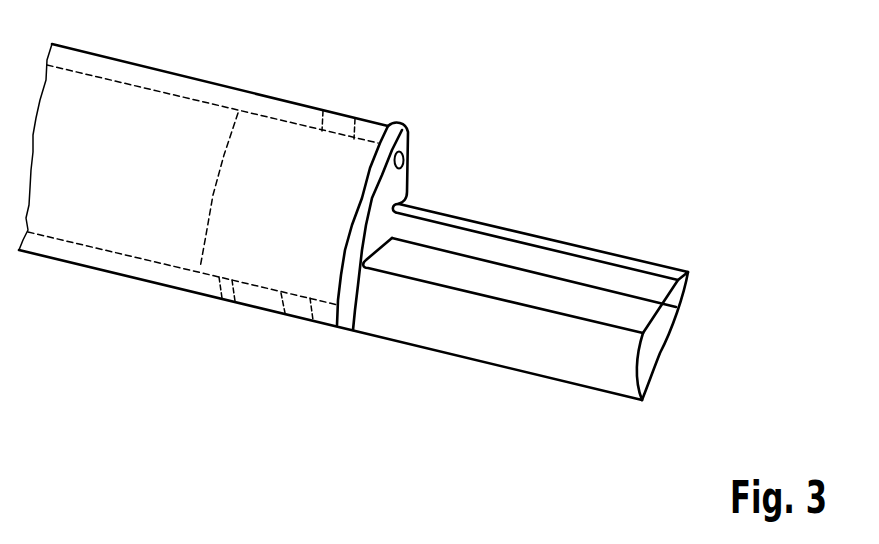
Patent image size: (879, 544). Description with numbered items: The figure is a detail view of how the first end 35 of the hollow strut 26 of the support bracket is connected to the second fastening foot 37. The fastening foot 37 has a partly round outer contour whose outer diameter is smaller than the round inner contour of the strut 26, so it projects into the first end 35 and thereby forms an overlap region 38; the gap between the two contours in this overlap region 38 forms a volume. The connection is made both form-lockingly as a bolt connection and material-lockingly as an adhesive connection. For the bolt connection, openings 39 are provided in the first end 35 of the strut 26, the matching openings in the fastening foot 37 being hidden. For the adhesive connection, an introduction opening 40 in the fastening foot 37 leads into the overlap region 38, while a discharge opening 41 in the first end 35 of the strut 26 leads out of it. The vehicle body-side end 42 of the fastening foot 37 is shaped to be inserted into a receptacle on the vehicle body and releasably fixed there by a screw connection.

The strut 26 is at (125, 103).
The first end of the strut 35 is at (118, 276).
The second fastening foot 37 is at (641, 268).
The overlap region 38 is at (268, 118).
The openings 39 is at (340, 118).
The introduction opening 40 is at (404, 160).
The discharge opening 41 is at (223, 298).
The vehicle body-side end 42 is at (712, 336).